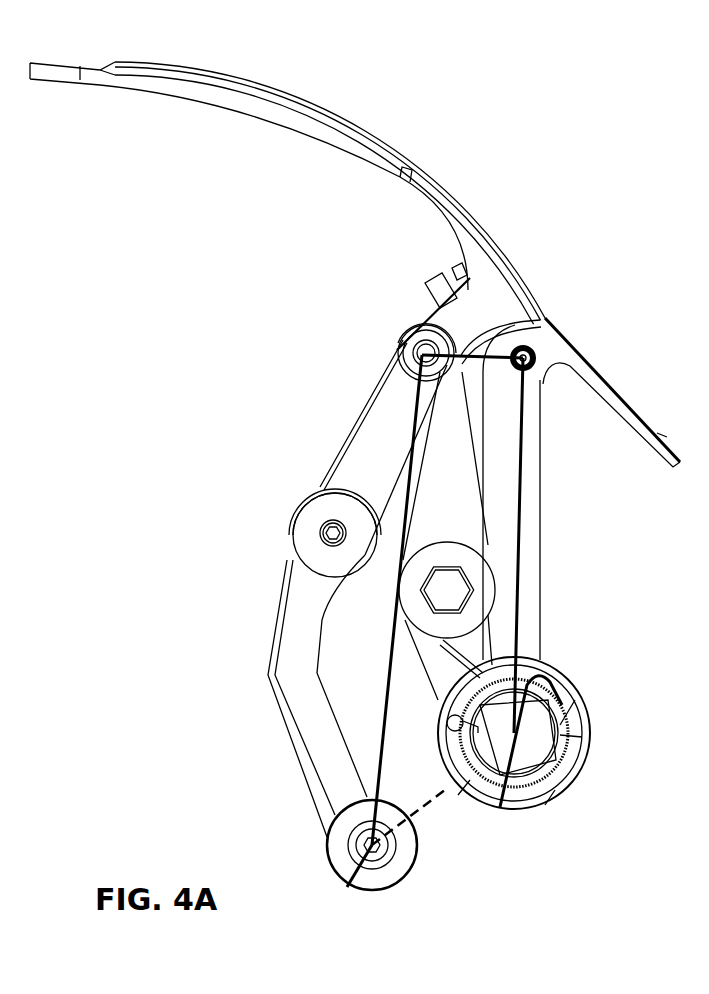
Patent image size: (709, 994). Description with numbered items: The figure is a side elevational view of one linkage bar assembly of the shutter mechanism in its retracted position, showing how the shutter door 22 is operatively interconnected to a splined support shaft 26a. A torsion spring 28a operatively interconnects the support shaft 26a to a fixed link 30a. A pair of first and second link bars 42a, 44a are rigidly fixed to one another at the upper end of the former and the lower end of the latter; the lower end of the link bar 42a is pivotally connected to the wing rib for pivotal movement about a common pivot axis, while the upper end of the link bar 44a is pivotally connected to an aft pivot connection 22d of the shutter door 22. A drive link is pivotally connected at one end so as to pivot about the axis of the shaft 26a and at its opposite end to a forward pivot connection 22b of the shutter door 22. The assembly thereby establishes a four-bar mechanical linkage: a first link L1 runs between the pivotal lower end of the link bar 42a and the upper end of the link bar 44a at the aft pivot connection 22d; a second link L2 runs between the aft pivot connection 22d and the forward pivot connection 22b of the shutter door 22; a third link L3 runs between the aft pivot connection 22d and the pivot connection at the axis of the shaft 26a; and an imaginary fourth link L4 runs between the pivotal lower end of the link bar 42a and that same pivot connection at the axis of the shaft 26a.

The shutter door 22 is at (285, 107).
The aft pivot connection 22d is at (410, 333).
The forward pivot connection 22b is at (547, 322).
The second link bar 44a is at (380, 432).
The first link bar 42a is at (295, 638).
The fixed link 30a is at (487, 640).
The torsion spring 28a is at (592, 720).
The splined support shaft 26a is at (545, 760).
The first link L1 is at (405, 525).
The second link L2 is at (473, 350).
The third link L3 is at (526, 446).
The imaginary fourth link L4 is at (437, 793).